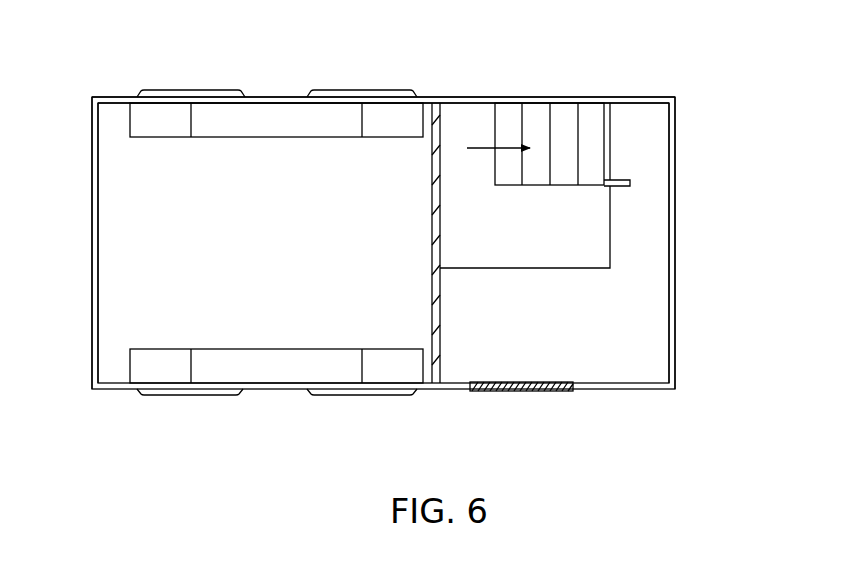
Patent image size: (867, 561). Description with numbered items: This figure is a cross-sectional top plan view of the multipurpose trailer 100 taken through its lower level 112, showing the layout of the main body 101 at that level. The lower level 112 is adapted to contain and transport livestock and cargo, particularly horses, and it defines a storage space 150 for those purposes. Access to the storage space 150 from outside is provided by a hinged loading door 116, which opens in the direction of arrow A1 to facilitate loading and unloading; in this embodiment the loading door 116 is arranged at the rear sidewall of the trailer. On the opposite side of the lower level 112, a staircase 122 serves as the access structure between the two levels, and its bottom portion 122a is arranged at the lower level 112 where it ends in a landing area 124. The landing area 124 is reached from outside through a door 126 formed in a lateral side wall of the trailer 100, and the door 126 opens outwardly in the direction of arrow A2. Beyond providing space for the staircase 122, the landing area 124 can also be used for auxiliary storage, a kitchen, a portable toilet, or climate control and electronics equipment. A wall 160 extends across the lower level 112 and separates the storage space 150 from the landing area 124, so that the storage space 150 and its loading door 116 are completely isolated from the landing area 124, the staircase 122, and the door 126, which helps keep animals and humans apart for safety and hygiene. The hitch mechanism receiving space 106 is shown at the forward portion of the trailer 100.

The multipurpose trailer 100 is at (176, 49).
The main body 101 is at (113, 91).
The lower level 112 is at (322, 67).
The loading door 116 is at (90, 224).
The storage space 150 is at (257, 246).
The wall 160 is at (431, 240).
The staircase 122 is at (572, 115).
The bottom portion of the staircase 122a is at (538, 117).
The hitch mechanism receiving space 106 is at (762, 250).
The landing area 124 is at (650, 305).
The door 126 is at (545, 392).
The arrow A1 is at (80, 348).
The arrow A2 is at (520, 392).